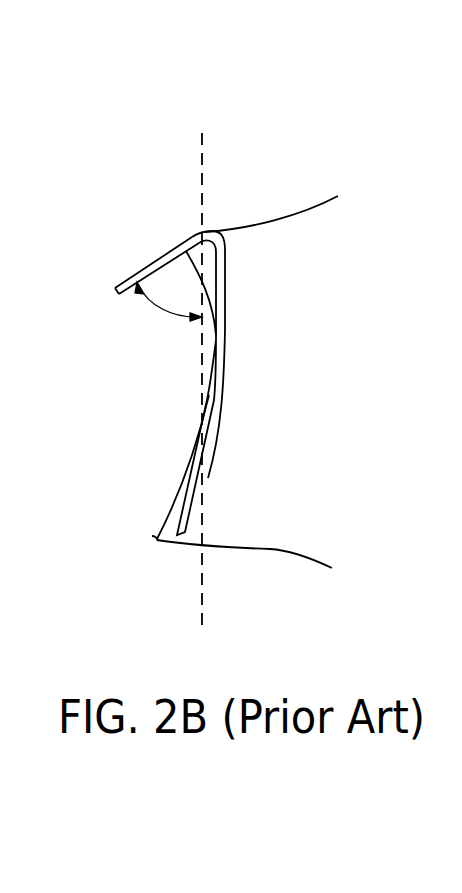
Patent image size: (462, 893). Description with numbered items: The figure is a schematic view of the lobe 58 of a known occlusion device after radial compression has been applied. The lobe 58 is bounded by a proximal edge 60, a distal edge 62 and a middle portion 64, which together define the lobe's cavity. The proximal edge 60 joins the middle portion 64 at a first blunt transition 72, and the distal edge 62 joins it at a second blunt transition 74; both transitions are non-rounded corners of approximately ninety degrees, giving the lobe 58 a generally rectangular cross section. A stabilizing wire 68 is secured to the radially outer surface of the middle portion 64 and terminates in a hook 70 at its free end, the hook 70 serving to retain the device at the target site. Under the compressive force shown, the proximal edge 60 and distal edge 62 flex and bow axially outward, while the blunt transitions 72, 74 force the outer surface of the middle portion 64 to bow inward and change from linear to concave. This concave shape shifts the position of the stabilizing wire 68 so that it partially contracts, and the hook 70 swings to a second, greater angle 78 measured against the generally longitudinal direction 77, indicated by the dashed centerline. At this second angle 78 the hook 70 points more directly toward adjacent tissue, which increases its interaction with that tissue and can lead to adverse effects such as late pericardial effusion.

The lobe 58 is at (280, 173).
The proximal edge 60 is at (255, 549).
The distal edge 62 is at (308, 211).
The middle portion 64 is at (192, 470).
The stabilizing wire 68 is at (223, 315).
The hook 70 is at (143, 268).
The first blunt transition 72 is at (157, 542).
The second blunt transition 74 is at (182, 237).
The longitudinal direction 77 is at (203, 156).
The second angle 78 is at (157, 307).